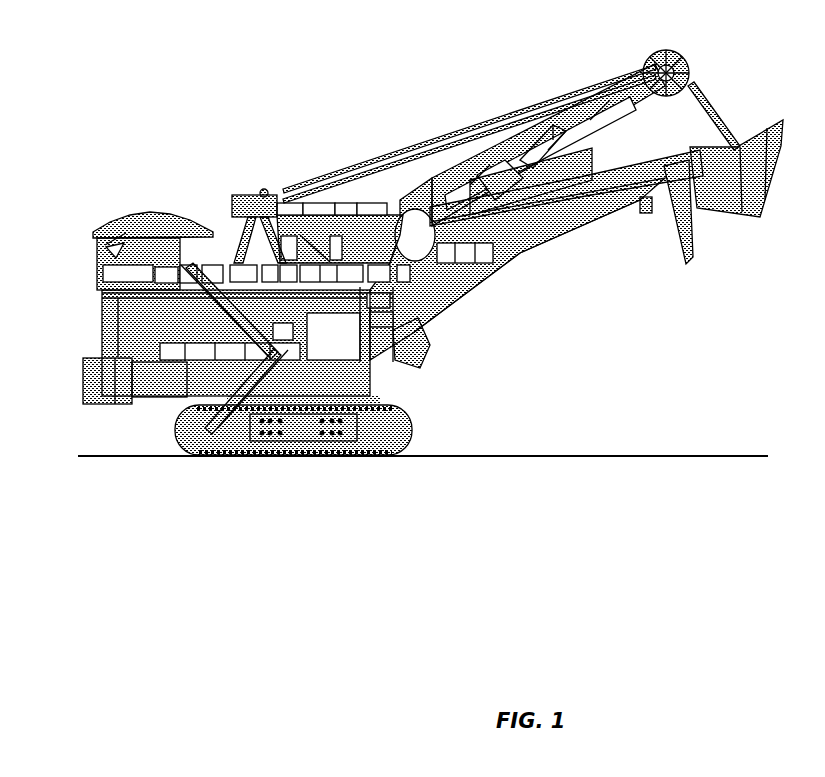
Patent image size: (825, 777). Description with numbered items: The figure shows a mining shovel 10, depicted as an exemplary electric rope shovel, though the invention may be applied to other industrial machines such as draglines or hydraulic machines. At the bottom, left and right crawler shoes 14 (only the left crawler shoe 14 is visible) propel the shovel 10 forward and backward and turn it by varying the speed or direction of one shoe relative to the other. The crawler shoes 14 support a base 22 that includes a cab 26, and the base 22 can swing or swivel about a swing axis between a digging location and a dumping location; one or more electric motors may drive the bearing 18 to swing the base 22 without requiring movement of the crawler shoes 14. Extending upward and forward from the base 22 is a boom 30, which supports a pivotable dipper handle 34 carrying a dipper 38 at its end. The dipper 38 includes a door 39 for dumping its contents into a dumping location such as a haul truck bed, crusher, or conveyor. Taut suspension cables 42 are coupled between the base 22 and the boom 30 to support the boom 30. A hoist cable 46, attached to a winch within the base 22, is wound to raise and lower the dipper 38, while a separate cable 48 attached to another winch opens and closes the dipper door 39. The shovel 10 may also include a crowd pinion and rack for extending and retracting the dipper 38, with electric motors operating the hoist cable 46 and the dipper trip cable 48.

The mining shovel 10 is at (120, 116).
The crawler shoes 14 is at (413, 435).
The bearing 18 is at (358, 458).
The base 22 is at (83, 374).
The cab 26 is at (390, 190).
The boom 30 is at (650, 100).
The dipper handle 34 is at (597, 183).
The dipper 38 is at (740, 147).
The door 39 is at (690, 240).
The suspension cables 42 is at (450, 130).
The hoist cable 46 is at (623, 65).
The dipper trip cable 48 is at (522, 252).